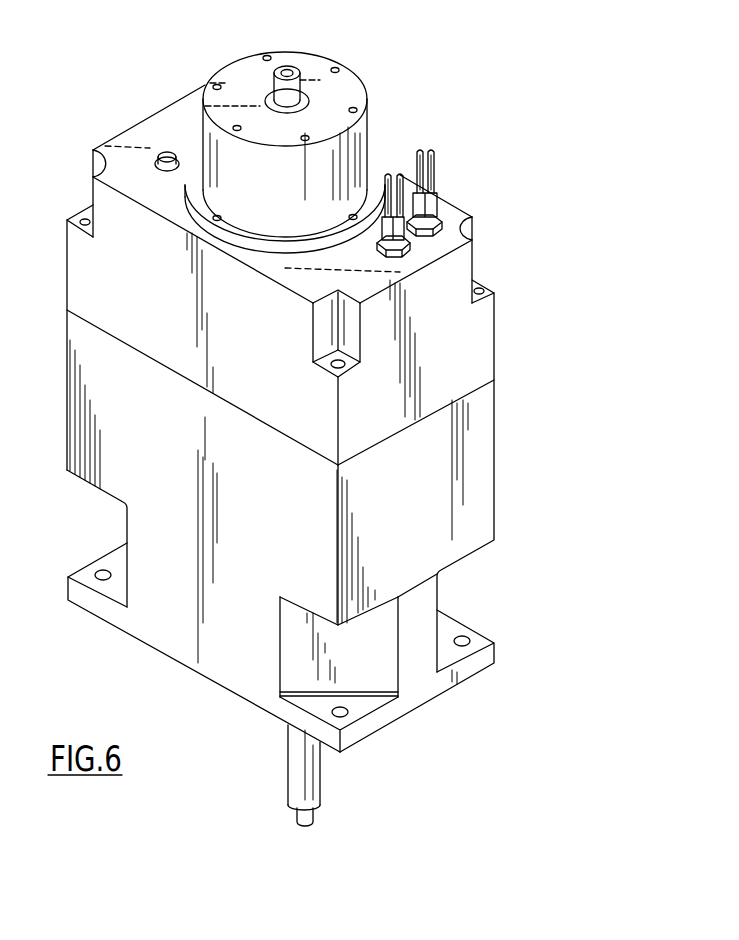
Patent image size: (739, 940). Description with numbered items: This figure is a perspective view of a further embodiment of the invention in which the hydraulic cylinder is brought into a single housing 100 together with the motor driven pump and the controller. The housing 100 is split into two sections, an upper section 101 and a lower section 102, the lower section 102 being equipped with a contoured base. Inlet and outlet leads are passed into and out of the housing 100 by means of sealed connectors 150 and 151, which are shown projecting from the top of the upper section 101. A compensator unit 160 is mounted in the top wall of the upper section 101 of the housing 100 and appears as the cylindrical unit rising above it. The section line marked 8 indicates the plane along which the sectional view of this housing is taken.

The section line for FIG. 8 is at (285, 42).
The housing 100 is at (511, 309).
The upper section 101 is at (476, 211).
The lower section 102 is at (509, 457).
The sealed connector 150 is at (433, 200).
The sealed connector 151 is at (412, 252).
The compensator unit 160 is at (373, 135).